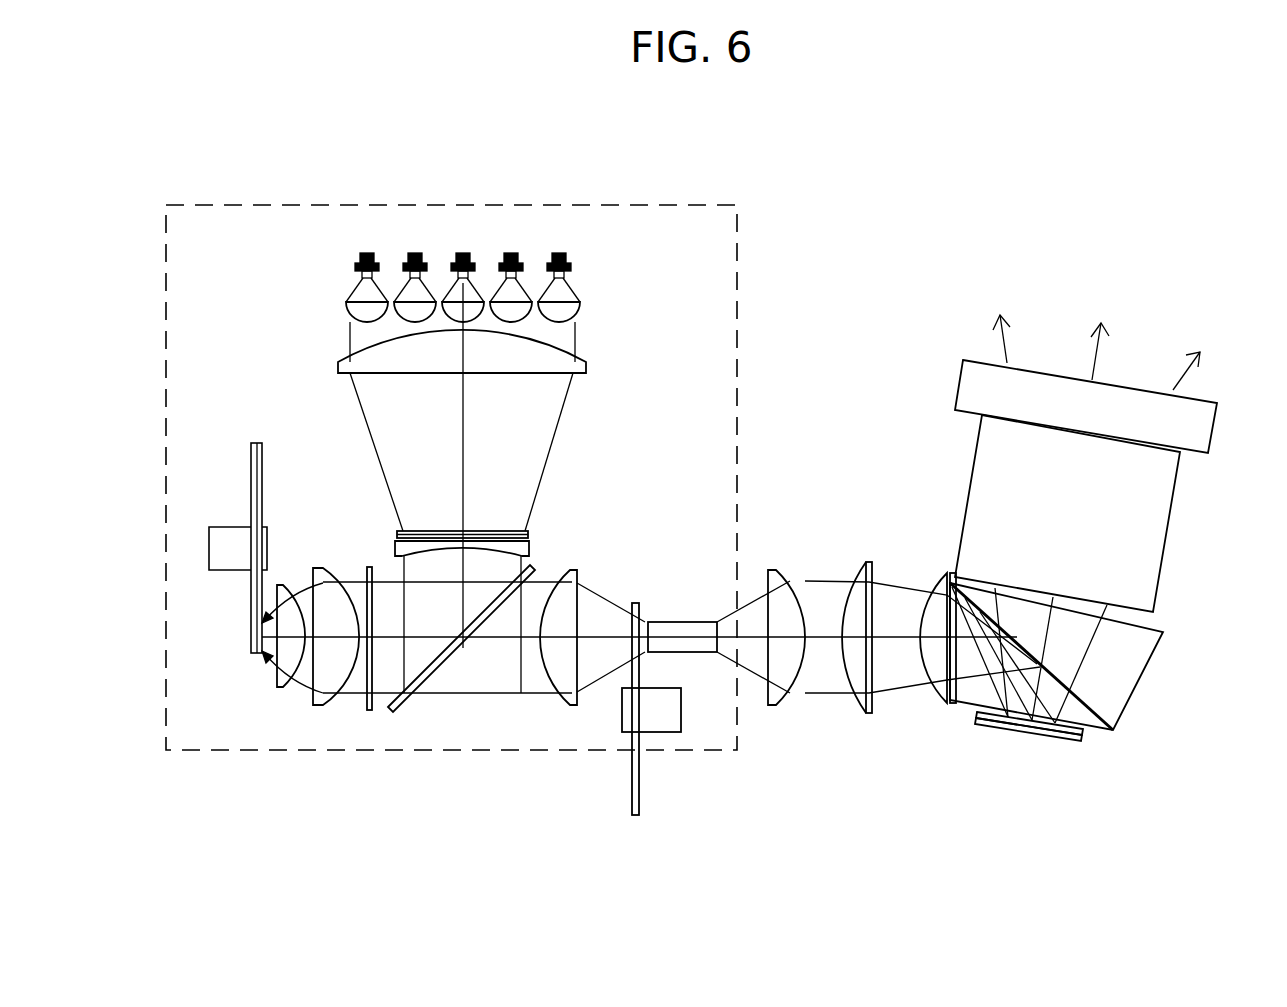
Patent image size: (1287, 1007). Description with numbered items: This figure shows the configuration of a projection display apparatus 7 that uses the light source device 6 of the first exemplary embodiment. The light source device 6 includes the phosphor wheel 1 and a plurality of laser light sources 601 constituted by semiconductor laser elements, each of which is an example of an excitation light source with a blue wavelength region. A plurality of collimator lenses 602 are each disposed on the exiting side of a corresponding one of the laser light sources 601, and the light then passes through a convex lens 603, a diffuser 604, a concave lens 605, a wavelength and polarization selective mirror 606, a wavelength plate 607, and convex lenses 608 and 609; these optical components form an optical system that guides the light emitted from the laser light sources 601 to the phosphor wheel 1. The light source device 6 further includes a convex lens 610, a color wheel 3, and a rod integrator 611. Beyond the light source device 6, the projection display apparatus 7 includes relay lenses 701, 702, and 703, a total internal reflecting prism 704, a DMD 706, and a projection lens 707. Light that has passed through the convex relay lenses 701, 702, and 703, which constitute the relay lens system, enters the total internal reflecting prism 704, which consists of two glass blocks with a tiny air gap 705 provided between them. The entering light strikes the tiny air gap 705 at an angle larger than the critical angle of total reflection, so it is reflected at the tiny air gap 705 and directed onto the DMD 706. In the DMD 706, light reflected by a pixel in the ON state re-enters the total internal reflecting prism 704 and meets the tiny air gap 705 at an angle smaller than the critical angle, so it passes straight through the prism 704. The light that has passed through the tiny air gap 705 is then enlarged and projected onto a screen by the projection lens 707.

The phosphor wheel 1 is at (257, 473).
The color wheel 3 is at (657, 715).
The light source device 6 is at (213, 205).
The projection display apparatus 7 is at (865, 213).
The laser light source 601 is at (573, 268).
The collimator lens 602 is at (577, 307).
The convex lens 603 is at (585, 365).
The diffuser 604 is at (528, 533).
The concave lens 605 is at (530, 548).
The wavelength and polarization selective mirror 606 is at (536, 568).
The wavelength plate 607 is at (372, 710).
The convex lens 608 is at (318, 700).
The convex lens 609 is at (283, 683).
The convex lens 610 is at (573, 703).
The rod integrator 611 is at (690, 645).
The relay lens 701 is at (775, 697).
The relay lens 702 is at (865, 705).
The relay lens 703 is at (945, 700).
The total internal reflecting prism 704 is at (1140, 645).
The tiny air gap 705 is at (1098, 712).
The DMD 706 is at (1083, 740).
The projection lens 707 is at (1127, 550).